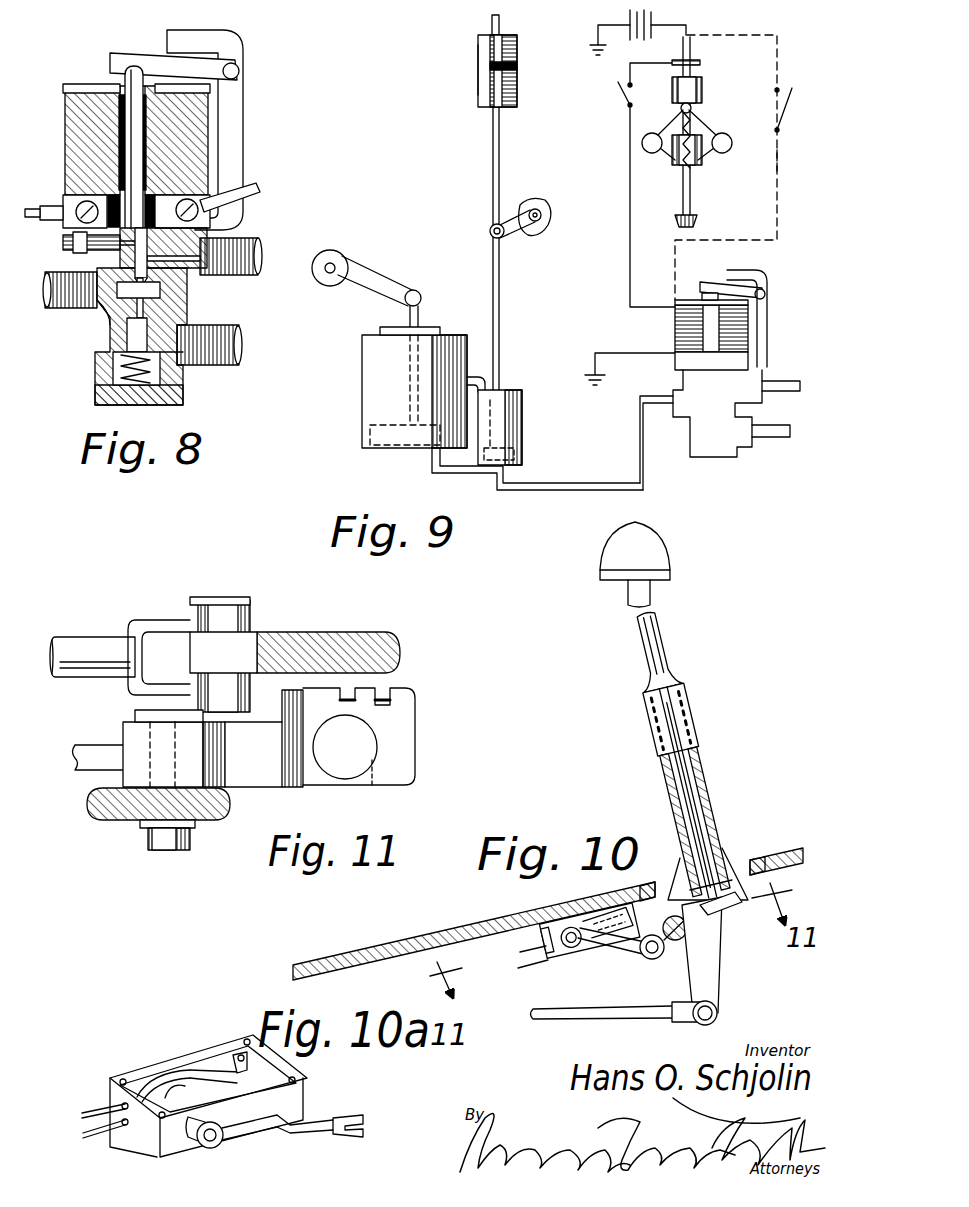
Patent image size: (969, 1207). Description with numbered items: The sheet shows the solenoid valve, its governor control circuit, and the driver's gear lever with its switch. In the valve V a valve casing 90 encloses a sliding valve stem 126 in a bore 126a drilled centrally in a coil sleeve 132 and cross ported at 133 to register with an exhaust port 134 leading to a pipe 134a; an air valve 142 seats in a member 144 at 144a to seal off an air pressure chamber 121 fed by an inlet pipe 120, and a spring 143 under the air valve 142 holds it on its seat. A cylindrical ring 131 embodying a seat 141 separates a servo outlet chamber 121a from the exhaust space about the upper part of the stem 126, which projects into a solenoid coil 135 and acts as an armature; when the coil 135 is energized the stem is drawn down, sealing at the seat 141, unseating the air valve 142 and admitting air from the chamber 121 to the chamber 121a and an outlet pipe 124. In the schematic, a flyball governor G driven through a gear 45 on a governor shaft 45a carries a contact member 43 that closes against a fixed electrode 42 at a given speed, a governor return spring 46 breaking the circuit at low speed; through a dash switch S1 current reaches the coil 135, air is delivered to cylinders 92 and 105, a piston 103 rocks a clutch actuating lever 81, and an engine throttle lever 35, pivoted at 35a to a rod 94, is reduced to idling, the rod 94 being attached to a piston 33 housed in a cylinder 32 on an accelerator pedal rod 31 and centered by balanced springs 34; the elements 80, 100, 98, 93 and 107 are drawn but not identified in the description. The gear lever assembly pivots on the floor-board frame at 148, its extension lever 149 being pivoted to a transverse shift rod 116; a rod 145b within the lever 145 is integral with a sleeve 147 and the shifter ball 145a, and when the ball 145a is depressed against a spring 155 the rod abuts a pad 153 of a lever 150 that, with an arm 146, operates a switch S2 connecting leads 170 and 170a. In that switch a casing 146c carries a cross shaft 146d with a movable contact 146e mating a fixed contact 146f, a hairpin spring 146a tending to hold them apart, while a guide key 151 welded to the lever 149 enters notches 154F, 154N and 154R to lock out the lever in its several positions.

In FIG. 8, the valve stem 126 is at (136, 78).
In FIG. 9, the valve stem 126 is at (712, 292).
In FIG. 8, the bore 126a is at (120, 95).
In FIG. 8, the solenoid coil 135 is at (72, 108).
In FIG. 9, the solenoid coil 135 is at (695, 340).
In FIG. 8, the coil sleeve 132 is at (120, 131).
In FIG. 8, the valve casing 90 is at (236, 240).
In FIG. 9, the valve casing 90 is at (742, 457).
In FIG. 8, the seat 141 is at (95, 257).
In FIG. 8, the cylindrical ring 131 is at (115, 270).
In FIG. 8, the exhaust pipe 134a is at (232, 250).
In FIG. 9, the exhaust pipe 134a is at (775, 385).
In FIG. 8, the exhaust port 134 is at (218, 278).
In FIG. 8, the outlet pipe 124 is at (70, 308).
In FIG. 9, the outlet pipe 124 is at (640, 452).
In FIG. 8, the servo outlet chamber 121a is at (150, 288).
In FIG. 8, the air valve seat 144a is at (170, 312).
In FIG. 8, the inlet pipe 120 is at (220, 340).
In FIG. 9, the inlet pipe 120 is at (765, 430).
In FIG. 8, the cross port 133 is at (105, 320).
In FIG. 8, the seat member 144 is at (125, 345).
In FIG. 8, the air valve 142 is at (118, 375).
In FIG. 8, the spring 143 is at (108, 402).
In FIG. 8, the air pressure chamber 121 is at (180, 380).
In FIG. 9, the accelerator pedal rod 31 is at (500, 26).
In FIG. 9, the cylinder 32 is at (510, 50).
In FIG. 9, the piston 33 is at (512, 70).
In FIG. 9, the balanced springs 34 is at (494, 78).
In FIG. 9, the rod 94 is at (500, 308).
In FIG. 9, the engine throttle lever 35 is at (528, 238).
In FIG. 9, the pivot 35a is at (490, 234).
In FIG. 9, the crank 80 is at (330, 257).
In FIG. 9, the clutch actuating lever 81 is at (395, 288).
In FIG. 9, the servo cylinder 105 is at (368, 366).
In FIG. 9, the piston rod 100 is at (405, 358).
In FIG. 9, the piston 103 is at (368, 434).
In FIG. 9, the pipe 98 is at (476, 375).
In FIG. 9, the cylinder 92 is at (515, 420).
In FIG. 9, the valve 93 is at (518, 462).
In FIG. 9, the pipe 107 is at (430, 468).
In FIG. 9, the lead 170 is at (780, 63).
In FIG. 10, the lead 170 is at (520, 952).
In FIG. 10a, the lead 170 is at (110, 1108).
In FIG. 9, the lead 170a is at (782, 186).
In FIG. 10, the lead 170a is at (518, 968).
In FIG. 10a, the lead 170a is at (120, 1130).
In FIG. 9, the switch S2 is at (796, 111).
In FIG. 10, the switch S2 is at (593, 949).
In FIG. 10a, the switch S2 is at (195, 1144).
In FIG. 9, the dash switch S1 is at (622, 92).
In FIG. 9, the fixed electrode 42 is at (702, 60).
In FIG. 9, the central electrode 43 is at (704, 85).
In FIG. 9, the flyball governor G is at (728, 135).
In FIG. 9, the governor return spring 46 is at (678, 165).
In FIG. 9, the governor shaft 45a is at (691, 190).
In FIG. 9, the gear 45 is at (700, 222).
In FIG. 9, the valve V is at (722, 360).
In FIG. 11, the reverse-forward shift rod 116 is at (105, 652).
In FIG. 10, the reverse-forward shift rod 116 is at (562, 1012).
In FIG. 11, the guide key 151 is at (355, 680).
In FIG. 11, the extension lever 149 is at (385, 645).
In FIG. 10, the extension lever 149 is at (710, 950).
In FIG. 11, the lever 146 is at (95, 752).
In FIG. 10, the lever 146 is at (628, 953).
In FIG. 10a, the lever 146 is at (262, 1138).
In FIG. 11, the lever 150 is at (252, 770).
In FIG. 10, the lever 150 is at (673, 942).
In FIG. 11, the notch 154F is at (292, 710).
In FIG. 11, the pad 153 is at (395, 768).
In FIG. 10, the pad 153 is at (735, 902).
In FIG. 11, the notch 154R is at (392, 706).
In FIG. 11, the notch 154N is at (347, 702).
In FIG. 11, the rod 145b is at (372, 785).
In FIG. 10, the rod 145b is at (742, 779).
In FIG. 10, the shifter ball 145a is at (665, 545).
In FIG. 10, the spring 155 is at (681, 646).
In FIG. 10, the sleeve 147 is at (701, 712).
In FIG. 10, the gear lever 145 is at (727, 806).
In FIG. 10, the pivot 148 is at (722, 860).
In FIG. 10, the hairpin spring 146a is at (603, 898).
In FIG. 10a, the hairpin spring 146a is at (312, 1136).
In FIG. 10a, the casing 146c is at (305, 1097).
In FIG. 10a, the cross shaft 146d is at (158, 1075).
In FIG. 10a, the movable contact 146e is at (175, 1084).
In FIG. 10a, the fixed contact 146f is at (243, 1060).